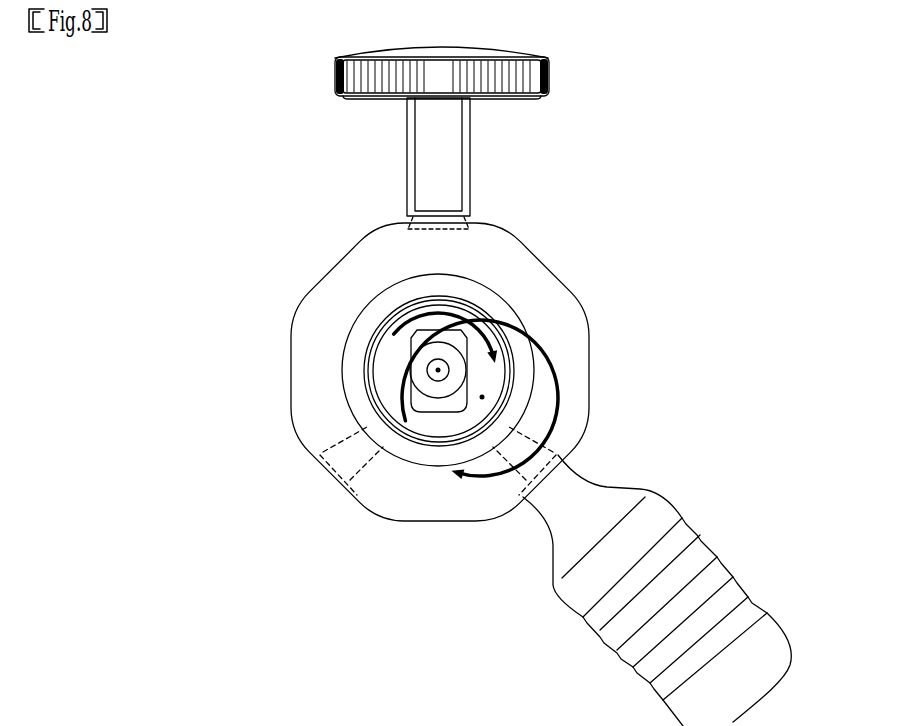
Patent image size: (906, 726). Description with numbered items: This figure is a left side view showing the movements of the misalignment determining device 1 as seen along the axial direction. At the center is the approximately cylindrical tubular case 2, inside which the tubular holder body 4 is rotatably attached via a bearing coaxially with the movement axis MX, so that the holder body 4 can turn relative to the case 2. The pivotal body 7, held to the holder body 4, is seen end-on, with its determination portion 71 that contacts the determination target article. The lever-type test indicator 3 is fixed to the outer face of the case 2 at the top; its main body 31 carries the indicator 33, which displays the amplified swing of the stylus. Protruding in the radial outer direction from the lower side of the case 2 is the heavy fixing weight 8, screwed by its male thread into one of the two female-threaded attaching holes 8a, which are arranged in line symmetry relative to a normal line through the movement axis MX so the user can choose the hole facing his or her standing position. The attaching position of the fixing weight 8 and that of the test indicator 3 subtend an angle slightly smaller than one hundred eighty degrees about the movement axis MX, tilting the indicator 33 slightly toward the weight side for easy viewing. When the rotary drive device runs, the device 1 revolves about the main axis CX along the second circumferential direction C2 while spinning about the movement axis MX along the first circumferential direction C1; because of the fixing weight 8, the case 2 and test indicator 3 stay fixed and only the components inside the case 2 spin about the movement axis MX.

The misalignment determining device 1 is at (642, 214).
The case 2 is at (296, 313).
The test indicator 3 is at (550, 78).
The main body 31 is at (407, 145).
The indicator 33 is at (334, 80).
The holder body 4 is at (387, 388).
The pivotal body 7 is at (439, 418).
The determination portion 71 is at (437, 377).
The fixing weight 8 is at (717, 533).
The attaching holes 8a is at (320, 457).
The first circumferential direction C1 is at (438, 312).
The second circumferential direction C2 is at (547, 348).
The main axis CX is at (484, 397).
The movement axis MX is at (437, 370).